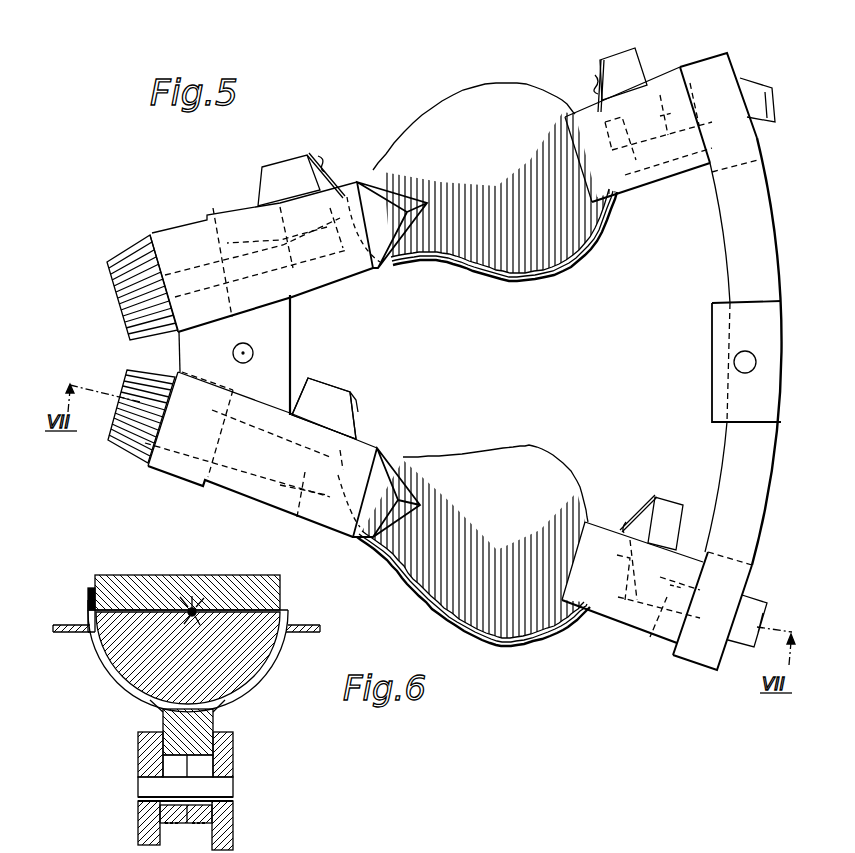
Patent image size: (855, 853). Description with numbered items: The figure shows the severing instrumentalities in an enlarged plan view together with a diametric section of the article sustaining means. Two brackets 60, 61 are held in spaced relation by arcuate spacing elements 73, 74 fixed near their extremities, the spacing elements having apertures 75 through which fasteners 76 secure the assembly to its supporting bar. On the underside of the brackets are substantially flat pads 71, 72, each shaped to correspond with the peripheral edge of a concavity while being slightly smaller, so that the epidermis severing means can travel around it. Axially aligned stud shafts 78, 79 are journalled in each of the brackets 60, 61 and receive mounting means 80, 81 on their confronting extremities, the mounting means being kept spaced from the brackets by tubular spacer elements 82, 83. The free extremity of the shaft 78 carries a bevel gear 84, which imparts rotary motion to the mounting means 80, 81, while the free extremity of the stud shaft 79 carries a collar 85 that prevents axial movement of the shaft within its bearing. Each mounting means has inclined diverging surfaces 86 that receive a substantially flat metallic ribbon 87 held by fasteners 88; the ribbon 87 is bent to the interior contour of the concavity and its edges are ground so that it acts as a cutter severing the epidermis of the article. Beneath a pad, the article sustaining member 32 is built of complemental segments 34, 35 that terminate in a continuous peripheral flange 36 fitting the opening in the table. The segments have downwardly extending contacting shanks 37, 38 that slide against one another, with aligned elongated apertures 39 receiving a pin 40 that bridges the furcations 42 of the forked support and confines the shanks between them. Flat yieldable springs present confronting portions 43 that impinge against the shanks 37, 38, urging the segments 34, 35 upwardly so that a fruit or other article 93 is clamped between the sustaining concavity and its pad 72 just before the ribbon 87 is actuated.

In FIG. 5, the bracket 60 is at (246, 205).
In FIG. 5, the bracket 61 is at (264, 420).
In FIG. 5, the pad 71 is at (456, 120).
In FIG. 5, the pad 72 is at (515, 462).
In FIG. 6, the pad 72 is at (160, 575).
In FIG. 5, the arcuate spacing element 73 is at (294, 331).
In FIG. 5, the arcuate spacing element 74 is at (735, 235).
In FIG. 5, the aperture 75 is at (253, 353).
In FIG. 5, the fastener 76 is at (736, 361).
In FIG. 5, the stud shaft 78 is at (225, 253).
In FIG. 5, the stud shaft 79 is at (715, 102).
In FIG. 5, the mounting means 80 is at (330, 406).
In FIG. 5, the mounting means 81 is at (268, 167).
In FIG. 5, the tubular spacer element 82 is at (237, 247).
In FIG. 5, the tubular spacer element 83 is at (665, 112).
In FIG. 5, the bevel gear 84 is at (120, 262).
In FIG. 5, the collar 85 is at (758, 86).
In FIG. 5, the inclined diverging surface 86 is at (303, 153).
In FIG. 5, the metallic ribbon 87 is at (332, 177).
In FIG. 6, the metallic ribbon 87 is at (88, 588).
In FIG. 5, the fastener 88 is at (321, 159).
In FIG. 6, the article sustaining member 32 is at (66, 621).
In FIG. 6, the segment 34 is at (106, 688).
In FIG. 6, the segment 35 is at (250, 697).
In FIG. 6, the peripheral flange 36 is at (53, 628).
In FIG. 6, the contacting shank 37 is at (163, 727).
In FIG. 6, the contacting shank 38 is at (218, 731).
In FIG. 6, the elongated aperture 39 is at (206, 766).
In FIG. 6, the pin 40 is at (227, 789).
In FIG. 6, the furcation 42 is at (145, 818).
In FIG. 6, the confronting portion 43 is at (193, 826).
In FIG. 6, the article 93 is at (224, 608).